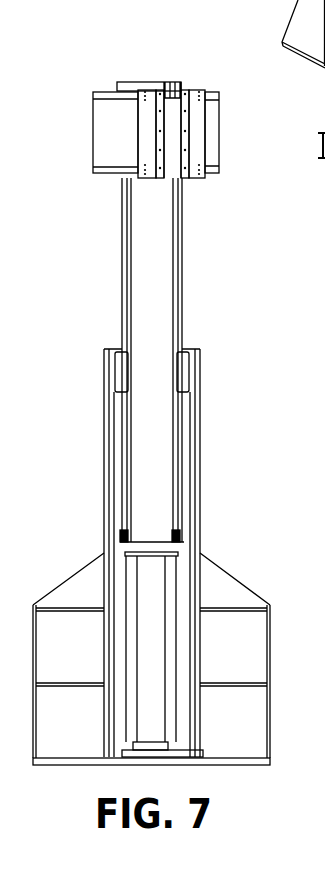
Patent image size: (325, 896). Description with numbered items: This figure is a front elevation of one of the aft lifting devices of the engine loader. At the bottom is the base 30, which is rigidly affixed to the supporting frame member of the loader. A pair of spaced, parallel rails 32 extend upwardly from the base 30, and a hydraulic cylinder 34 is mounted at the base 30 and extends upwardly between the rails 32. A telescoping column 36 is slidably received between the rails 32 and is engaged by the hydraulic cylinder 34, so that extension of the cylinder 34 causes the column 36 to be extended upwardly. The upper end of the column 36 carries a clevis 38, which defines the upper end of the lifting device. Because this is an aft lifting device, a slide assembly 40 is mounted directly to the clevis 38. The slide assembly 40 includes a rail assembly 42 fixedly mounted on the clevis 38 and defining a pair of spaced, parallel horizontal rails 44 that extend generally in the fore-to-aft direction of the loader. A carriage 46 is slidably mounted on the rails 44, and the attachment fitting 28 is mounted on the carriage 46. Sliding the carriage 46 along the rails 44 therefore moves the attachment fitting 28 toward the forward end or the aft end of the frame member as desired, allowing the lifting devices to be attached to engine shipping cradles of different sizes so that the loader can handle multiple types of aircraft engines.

The attachment fitting 28 is at (177, 87).
The base 30 is at (257, 640).
The rails 32 is at (105, 420).
The hydraulic cylinder 34 is at (152, 585).
The telescoping column 36 is at (182, 272).
The clevis 38 is at (128, 85).
The slide assembly 40 is at (99, 92).
The rail assembly 42 is at (102, 145).
The horizontal rails 44 is at (112, 93).
The carriage 46 is at (198, 152).